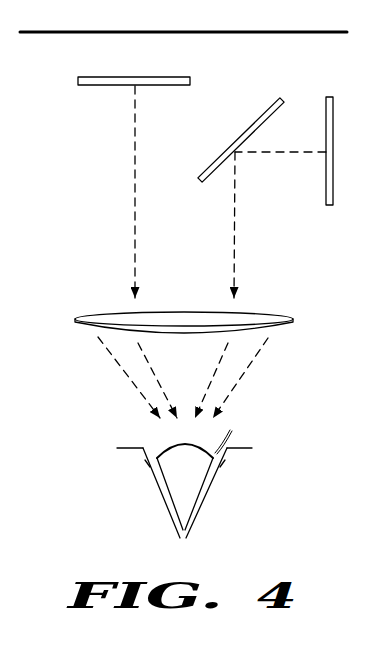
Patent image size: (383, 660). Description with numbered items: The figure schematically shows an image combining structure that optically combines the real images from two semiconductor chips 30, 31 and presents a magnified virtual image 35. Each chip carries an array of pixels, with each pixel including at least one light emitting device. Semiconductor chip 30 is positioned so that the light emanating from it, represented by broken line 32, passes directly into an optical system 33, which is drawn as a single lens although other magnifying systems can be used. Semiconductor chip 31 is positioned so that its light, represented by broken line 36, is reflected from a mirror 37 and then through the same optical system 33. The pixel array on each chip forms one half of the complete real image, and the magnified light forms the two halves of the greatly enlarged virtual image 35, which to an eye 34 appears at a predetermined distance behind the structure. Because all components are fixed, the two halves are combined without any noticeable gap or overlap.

The semiconductor chip 30 is at (110, 86).
The semiconductor chip 31 is at (326, 198).
The broken line 32 is at (134, 200).
The optical system 33 is at (268, 313).
The eye 34 is at (145, 505).
The virtual image 35 is at (77, 33).
The broken line 36 is at (253, 153).
The mirror 37 is at (237, 136).